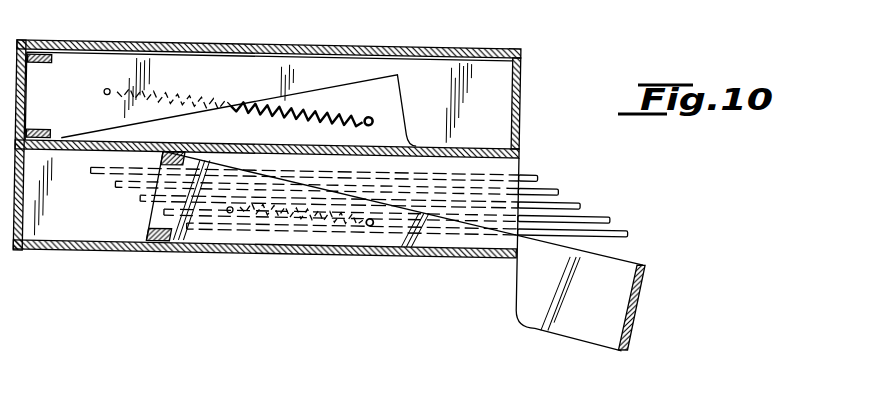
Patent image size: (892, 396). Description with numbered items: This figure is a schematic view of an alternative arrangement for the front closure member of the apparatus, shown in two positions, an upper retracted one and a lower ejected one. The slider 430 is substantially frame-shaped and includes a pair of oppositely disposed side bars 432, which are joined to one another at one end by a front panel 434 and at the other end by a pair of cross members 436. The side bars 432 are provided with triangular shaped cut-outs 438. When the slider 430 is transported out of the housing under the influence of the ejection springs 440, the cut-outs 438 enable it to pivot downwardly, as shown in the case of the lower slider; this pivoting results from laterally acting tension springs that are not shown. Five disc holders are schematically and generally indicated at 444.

The slider 430 is at (528, 67).
The side bars 432 is at (441, 77).
The front panel 434 is at (523, 112).
The cross members 436 is at (53, 130).
The triangular shaped cut-outs 438 is at (370, 84).
The ejection springs 440 is at (297, 100).
The disc holders 444 is at (584, 190).